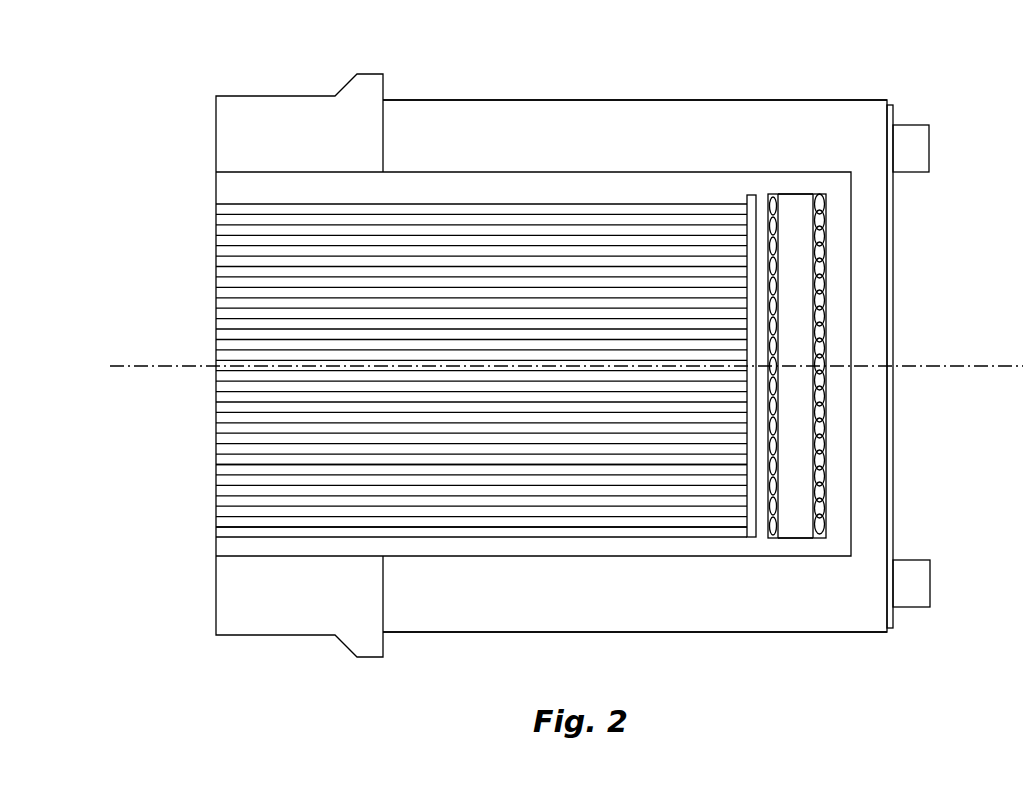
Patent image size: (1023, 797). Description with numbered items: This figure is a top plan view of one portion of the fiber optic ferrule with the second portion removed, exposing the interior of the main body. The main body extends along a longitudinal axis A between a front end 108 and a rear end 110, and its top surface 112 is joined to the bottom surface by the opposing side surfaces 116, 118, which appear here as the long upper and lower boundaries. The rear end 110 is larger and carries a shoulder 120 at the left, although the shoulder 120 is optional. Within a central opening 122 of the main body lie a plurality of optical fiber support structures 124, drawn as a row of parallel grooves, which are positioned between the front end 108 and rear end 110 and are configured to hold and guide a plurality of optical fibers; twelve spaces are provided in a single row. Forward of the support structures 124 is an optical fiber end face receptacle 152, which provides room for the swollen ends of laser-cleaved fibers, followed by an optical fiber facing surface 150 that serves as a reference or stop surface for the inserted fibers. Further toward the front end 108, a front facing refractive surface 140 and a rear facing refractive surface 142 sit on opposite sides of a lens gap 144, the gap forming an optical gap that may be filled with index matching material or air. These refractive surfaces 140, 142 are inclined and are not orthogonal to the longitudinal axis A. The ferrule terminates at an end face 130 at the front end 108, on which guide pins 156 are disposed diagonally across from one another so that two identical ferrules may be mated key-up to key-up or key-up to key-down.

The longitudinal axis A is at (566, 355).
The front end 108 is at (616, 367).
The rear end 110 is at (194, 508).
The top surface 112 is at (840, 125).
The side surface 116 is at (637, 100).
The side surface 118 is at (762, 632).
The shoulder 120 is at (383, 657).
The central opening 122 is at (282, 534).
The optical fiber support structures 124 is at (216, 468).
The end face 130 is at (893, 217).
The front facing refractive surface 140 is at (778, 329).
The rear facing refractive surface 142 is at (825, 288).
The lens gap 144 is at (805, 432).
The optical fiber facing surface 150 is at (858, 279).
The optical fiber end face receptacle 152 is at (749, 195).
The guide pins 156 is at (930, 142).